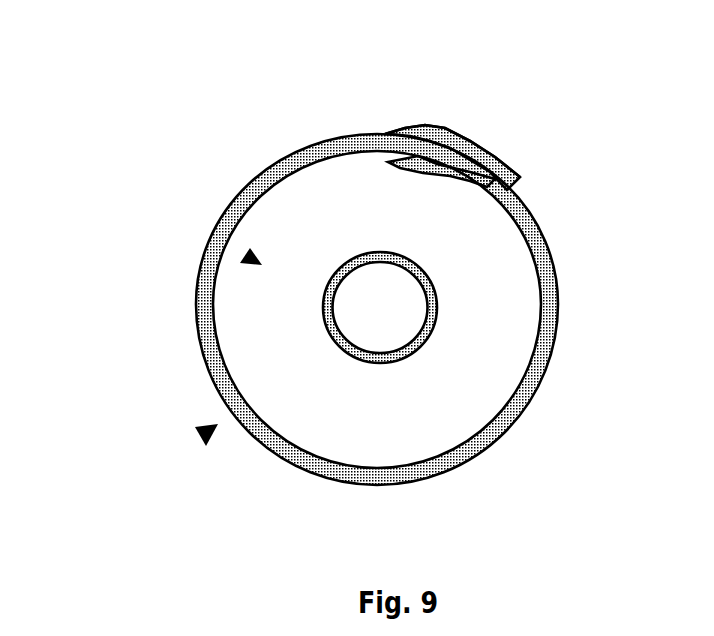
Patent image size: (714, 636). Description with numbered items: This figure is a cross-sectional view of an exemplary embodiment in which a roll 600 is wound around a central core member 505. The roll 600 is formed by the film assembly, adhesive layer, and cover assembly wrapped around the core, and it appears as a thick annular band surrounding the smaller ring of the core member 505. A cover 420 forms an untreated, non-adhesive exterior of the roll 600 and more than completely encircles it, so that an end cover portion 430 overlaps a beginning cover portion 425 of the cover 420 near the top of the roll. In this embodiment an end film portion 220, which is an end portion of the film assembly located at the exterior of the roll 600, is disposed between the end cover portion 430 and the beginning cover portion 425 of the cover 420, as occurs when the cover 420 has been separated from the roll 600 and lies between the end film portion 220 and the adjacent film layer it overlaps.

The end film portion 220 is at (440, 157).
The cover 420 is at (197, 435).
The beginning cover portion 425 is at (493, 168).
The end cover portion 430 is at (476, 146).
The core member 505 is at (437, 293).
The roll 600 is at (240, 257).